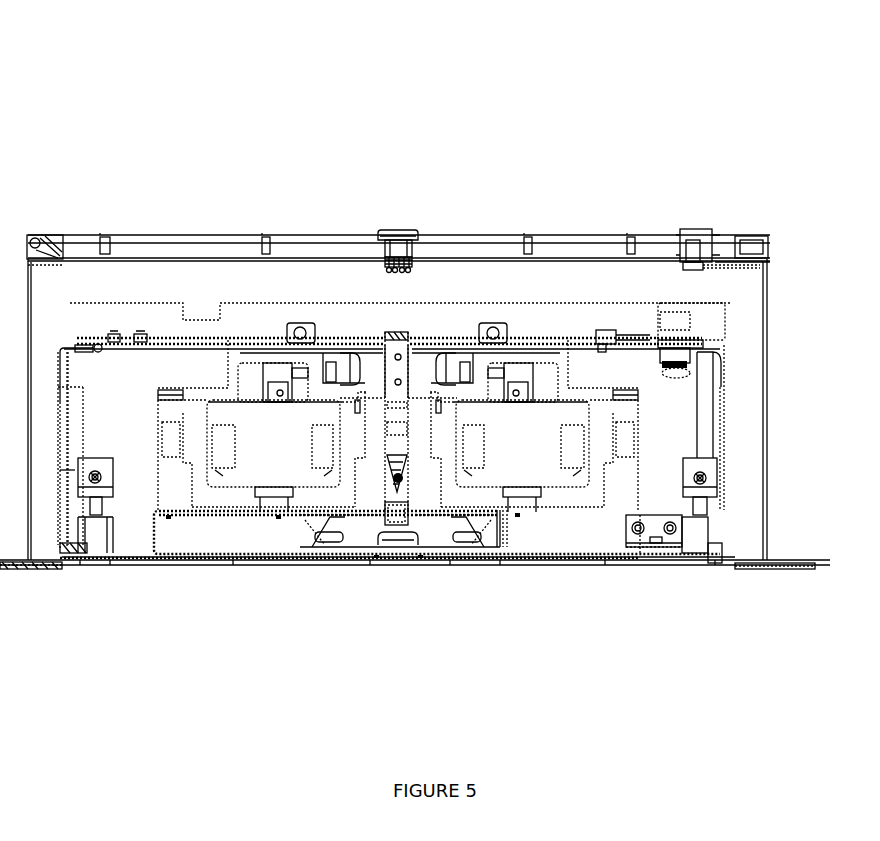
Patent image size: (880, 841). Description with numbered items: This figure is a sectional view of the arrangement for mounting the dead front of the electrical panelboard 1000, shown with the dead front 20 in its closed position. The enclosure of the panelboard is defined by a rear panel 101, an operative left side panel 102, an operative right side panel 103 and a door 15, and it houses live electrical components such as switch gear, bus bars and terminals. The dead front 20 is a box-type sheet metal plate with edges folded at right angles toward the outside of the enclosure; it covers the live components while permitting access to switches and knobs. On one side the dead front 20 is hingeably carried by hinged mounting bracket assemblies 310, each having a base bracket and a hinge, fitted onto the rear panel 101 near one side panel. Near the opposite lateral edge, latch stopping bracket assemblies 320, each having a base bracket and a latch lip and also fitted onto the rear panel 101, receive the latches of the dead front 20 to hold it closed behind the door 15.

The electrical panelboard 1000 is at (690, 106).
The door 15 is at (229, 232).
The dead front 20 is at (303, 327).
The hinged mounting bracket assembly 310 is at (77, 385).
The latch stopping bracket assembly 320 is at (702, 383).
The rear panel 101 is at (218, 565).
The operative left side panel 102 is at (27, 528).
The operative right side panel 103 is at (768, 516).